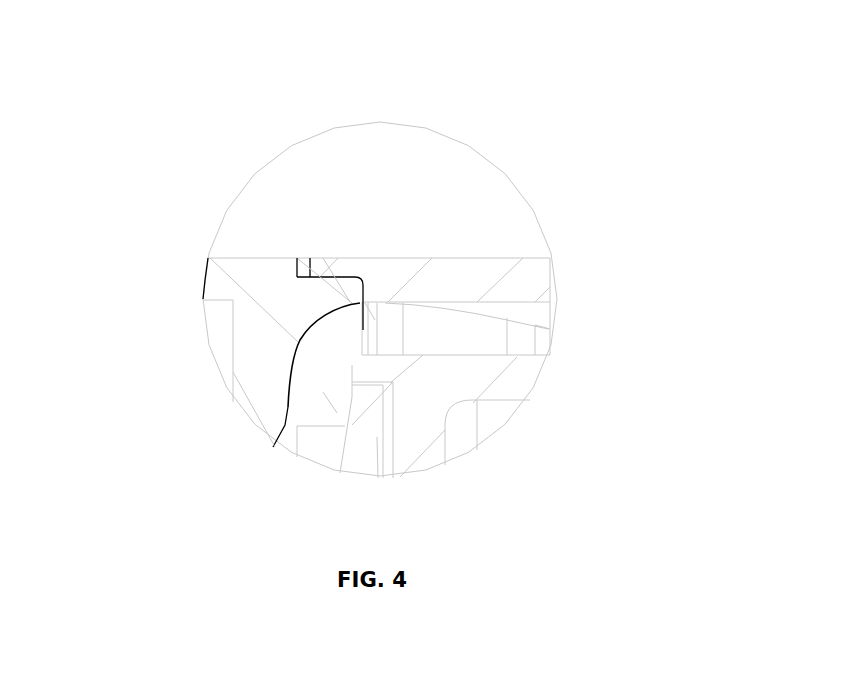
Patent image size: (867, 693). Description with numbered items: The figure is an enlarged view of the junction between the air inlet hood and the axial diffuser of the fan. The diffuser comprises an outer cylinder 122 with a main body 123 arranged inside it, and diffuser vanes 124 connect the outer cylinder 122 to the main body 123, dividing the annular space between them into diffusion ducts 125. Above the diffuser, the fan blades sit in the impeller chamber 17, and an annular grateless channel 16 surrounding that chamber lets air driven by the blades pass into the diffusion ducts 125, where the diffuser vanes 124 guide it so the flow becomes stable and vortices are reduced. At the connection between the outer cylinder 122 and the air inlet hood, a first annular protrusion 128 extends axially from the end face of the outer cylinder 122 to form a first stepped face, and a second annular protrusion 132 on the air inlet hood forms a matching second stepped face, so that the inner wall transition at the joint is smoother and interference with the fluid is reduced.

The annular grateless channel 16 is at (335, 370).
The impeller chamber 17 is at (333, 415).
The outer cylinder 122 is at (528, 273).
The main body 123 is at (517, 378).
The diffuser vane 124 is at (287, 70).
The diffusion duct 125 is at (392, 70).
The first annular protrusion 128 is at (248, 142).
The second annular protrusion 132 is at (145, 145).